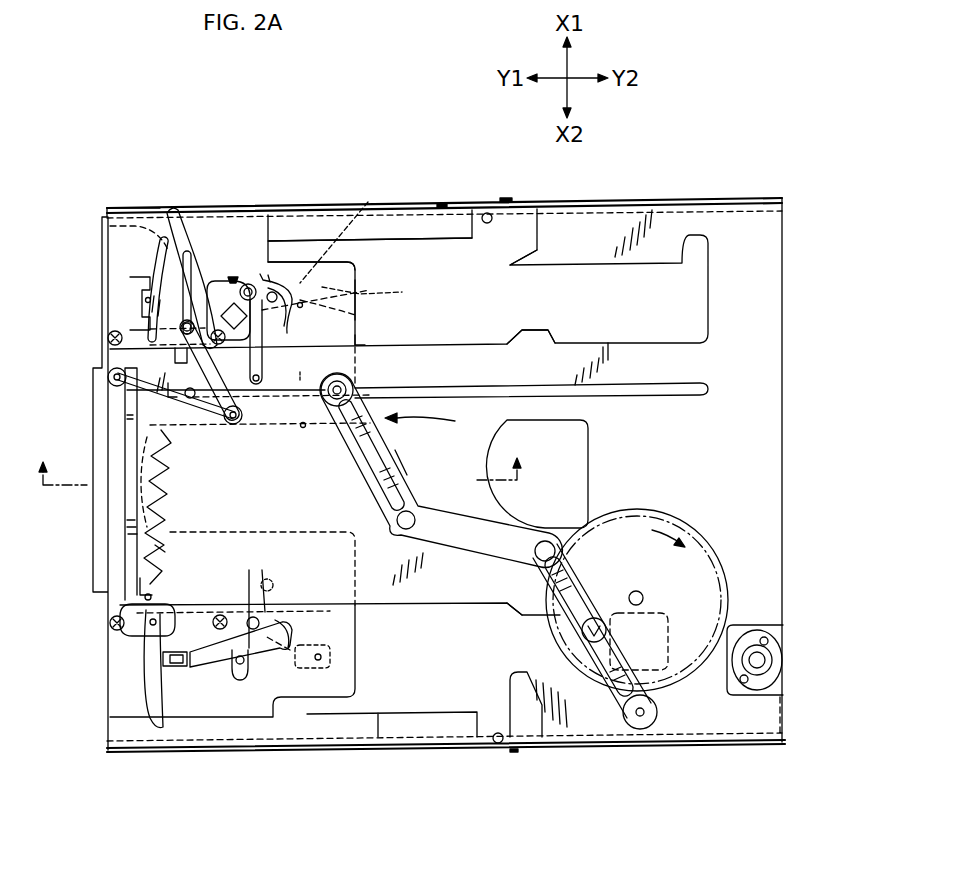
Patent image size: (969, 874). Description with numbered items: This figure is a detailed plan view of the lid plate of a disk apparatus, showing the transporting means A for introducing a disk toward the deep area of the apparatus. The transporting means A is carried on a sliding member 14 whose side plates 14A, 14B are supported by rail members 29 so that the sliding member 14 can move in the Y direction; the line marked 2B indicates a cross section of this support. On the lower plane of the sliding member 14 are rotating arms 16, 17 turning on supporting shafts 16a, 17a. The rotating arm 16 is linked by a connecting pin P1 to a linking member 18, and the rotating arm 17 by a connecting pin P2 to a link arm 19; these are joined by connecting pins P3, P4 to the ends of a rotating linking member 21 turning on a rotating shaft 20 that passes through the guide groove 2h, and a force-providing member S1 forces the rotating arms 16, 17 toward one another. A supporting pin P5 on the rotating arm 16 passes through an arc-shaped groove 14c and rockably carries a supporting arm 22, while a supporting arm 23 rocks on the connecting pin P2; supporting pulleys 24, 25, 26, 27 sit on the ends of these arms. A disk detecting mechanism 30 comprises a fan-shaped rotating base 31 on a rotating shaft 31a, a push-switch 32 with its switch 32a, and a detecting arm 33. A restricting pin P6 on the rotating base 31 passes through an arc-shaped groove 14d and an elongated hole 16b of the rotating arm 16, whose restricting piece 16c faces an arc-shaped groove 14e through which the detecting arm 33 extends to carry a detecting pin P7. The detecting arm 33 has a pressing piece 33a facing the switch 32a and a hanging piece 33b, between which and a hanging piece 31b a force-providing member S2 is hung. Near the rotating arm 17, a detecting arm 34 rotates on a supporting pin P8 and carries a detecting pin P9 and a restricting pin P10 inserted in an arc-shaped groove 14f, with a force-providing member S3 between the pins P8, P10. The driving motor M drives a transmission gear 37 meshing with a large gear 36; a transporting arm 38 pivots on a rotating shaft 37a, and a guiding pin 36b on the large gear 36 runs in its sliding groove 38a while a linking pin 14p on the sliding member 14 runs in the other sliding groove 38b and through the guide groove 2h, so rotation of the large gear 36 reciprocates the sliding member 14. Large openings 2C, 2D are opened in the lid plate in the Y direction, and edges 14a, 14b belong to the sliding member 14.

The sliding member 14 is at (356, 259).
The side plate 14A is at (110, 226).
The side plate 14B is at (130, 737).
The chassis side wall 14a is at (163, 212).
The chassis arm 14b is at (150, 690).
The arc-shaped groove 14c is at (138, 300).
The arc-shaped groove 14d is at (290, 232).
The arc-shaped groove 14e is at (356, 300).
The arc-shaped groove 14f is at (292, 637).
The linking pin 14p is at (352, 388).
The rotating arm 16 is at (357, 264).
The supporting shaft 16a is at (383, 290).
The elongated hole 16b is at (346, 230).
The restricting piece 16c is at (360, 338).
The rotating arm 17 is at (307, 717).
The supporting shaft 17a is at (332, 658).
The linking member 18 is at (228, 422).
The link arm 19 is at (128, 438).
The rotating shaft 20 is at (192, 400).
The rotating linking member 21 is at (147, 400).
The supporting arm 22 is at (168, 289).
The supporting arm 23 is at (162, 552).
The supporting pulley 24 is at (110, 340).
The supporting pulley 25 is at (183, 253).
The supporting pulley 26 is at (110, 622).
The supporting pulley 27 is at (222, 614).
The rail member 29 is at (487, 212).
The disk detecting mechanism 30 is at (182, 208).
The rotating base 31 is at (205, 262).
The rotating shaft 31a is at (293, 283).
The hanging piece 31b is at (231, 278).
The push-switch 32 is at (248, 284).
The switch 32a is at (257, 417).
The detecting arm 33 is at (262, 392).
The pressing piece 33a is at (275, 365).
The hanging piece 33b is at (300, 372).
The detecting arm 34 is at (340, 599).
The large gear 36 is at (657, 510).
The guiding pin 36b is at (612, 613).
The transmission gear 37 is at (648, 730).
The rotating shaft 37a is at (636, 716).
The transporting arm 38 is at (458, 545).
The sliding groove 38a is at (620, 637).
The sliding groove 38b is at (368, 438).
The large opening 2C is at (618, 341).
The large opening 2D is at (434, 606).
The guide groove 2h is at (530, 386).
The section line 2B is at (284, 488).
The transporting means A is at (432, 422).
The driving motor M is at (777, 660).
The connecting pin P1 is at (147, 300).
The connecting pin P2 is at (162, 593).
The connecting pin P3 is at (243, 425).
The connecting pin P4 is at (112, 378).
The supporting pin P5 is at (187, 327).
The restricting pin P6 is at (300, 305).
The detecting pin P7 is at (303, 425).
The supporting pin P8 is at (240, 666).
The detecting pin P9 is at (258, 616).
The restricting pin P10 is at (262, 578).
The force-providing member S1 is at (168, 512).
The force-providing member S2 is at (270, 280).
The force-providing member S3 is at (180, 668).